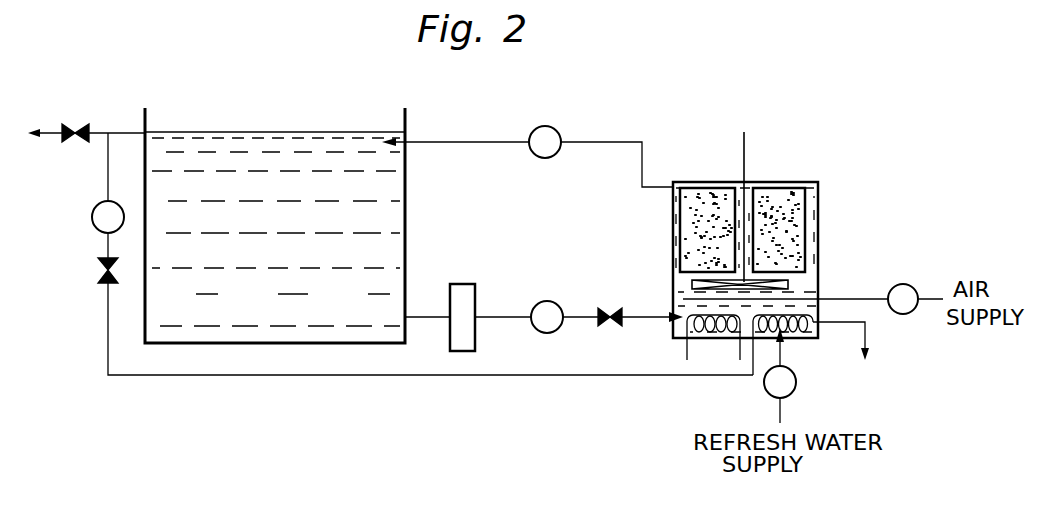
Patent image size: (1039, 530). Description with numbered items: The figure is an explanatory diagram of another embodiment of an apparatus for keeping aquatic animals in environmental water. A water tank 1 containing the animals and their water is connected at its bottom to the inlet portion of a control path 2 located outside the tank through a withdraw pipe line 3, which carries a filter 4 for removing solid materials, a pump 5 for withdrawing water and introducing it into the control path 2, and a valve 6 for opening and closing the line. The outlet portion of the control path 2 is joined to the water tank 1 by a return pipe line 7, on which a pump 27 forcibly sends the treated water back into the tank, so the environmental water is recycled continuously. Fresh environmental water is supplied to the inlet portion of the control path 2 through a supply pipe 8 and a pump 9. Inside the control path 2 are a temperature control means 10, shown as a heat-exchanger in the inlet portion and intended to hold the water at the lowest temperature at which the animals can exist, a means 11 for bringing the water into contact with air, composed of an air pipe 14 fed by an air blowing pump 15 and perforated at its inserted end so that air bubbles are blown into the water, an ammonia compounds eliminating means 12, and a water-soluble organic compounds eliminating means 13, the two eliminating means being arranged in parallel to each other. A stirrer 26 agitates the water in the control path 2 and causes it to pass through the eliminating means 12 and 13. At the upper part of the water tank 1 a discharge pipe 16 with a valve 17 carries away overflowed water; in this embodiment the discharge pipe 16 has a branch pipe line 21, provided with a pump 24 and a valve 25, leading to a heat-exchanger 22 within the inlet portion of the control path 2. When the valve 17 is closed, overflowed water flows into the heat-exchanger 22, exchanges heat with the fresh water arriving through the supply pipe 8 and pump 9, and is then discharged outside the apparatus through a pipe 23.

The water tank 1 is at (388, 242).
The control path 2 is at (828, 222).
The withdraw pipe line 3 is at (505, 319).
The filter 4 is at (468, 296).
The pump 5 is at (547, 301).
The valve 6 is at (610, 308).
The return pipe line 7 is at (468, 142).
The supply pipe 8 is at (782, 350).
The pump 9 is at (796, 386).
The temperature control means 10 is at (682, 332).
The means for bringing the environmental water into contact with air 11 is at (790, 288).
The ammonia compounds eliminating means 12 is at (790, 246).
The water-soluble organic compounds eliminating means 13 is at (685, 245).
The air pipe 14 is at (880, 299).
The air blowing pump 15 is at (916, 290).
The discharge pipe 16 is at (118, 132).
The valve 17 is at (76, 124).
The branch pipe line 21 is at (108, 182).
The heat-exchanger 22 is at (806, 330).
The pipe 23 is at (867, 338).
The pump 24 is at (92, 219).
The valve 25 is at (98, 270).
The stirrer 26 is at (746, 150).
The pump 27 is at (562, 136).